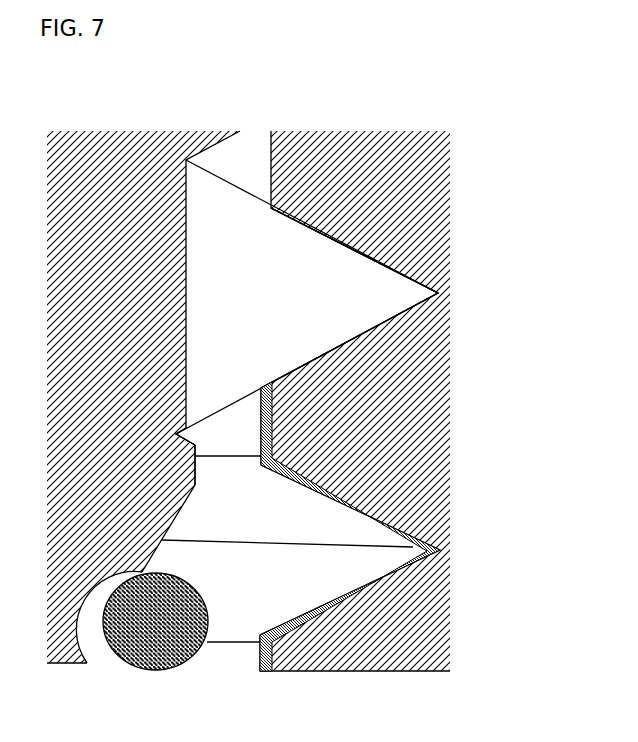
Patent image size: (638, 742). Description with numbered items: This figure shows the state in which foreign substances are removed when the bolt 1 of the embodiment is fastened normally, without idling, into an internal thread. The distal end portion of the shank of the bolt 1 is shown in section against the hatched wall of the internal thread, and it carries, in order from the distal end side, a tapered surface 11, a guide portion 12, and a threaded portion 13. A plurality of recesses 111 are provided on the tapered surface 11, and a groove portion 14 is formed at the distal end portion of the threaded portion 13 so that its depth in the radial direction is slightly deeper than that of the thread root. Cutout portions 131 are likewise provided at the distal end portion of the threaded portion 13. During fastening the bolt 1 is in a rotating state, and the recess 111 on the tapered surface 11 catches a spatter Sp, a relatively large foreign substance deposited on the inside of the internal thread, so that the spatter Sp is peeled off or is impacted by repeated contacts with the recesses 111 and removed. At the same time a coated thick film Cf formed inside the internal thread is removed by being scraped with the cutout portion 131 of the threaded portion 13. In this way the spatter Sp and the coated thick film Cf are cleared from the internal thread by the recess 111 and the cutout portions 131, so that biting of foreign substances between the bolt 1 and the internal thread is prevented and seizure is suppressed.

The bolt 1 is at (87, 120).
The tapered surface 11 is at (162, 546).
The guide portion 12 is at (200, 468).
The threaded portion 13 is at (441, 298).
The groove portion 14 is at (184, 433).
The recess 111 is at (98, 640).
The cutout portion 131 is at (373, 293).
The coated thick film Cf is at (325, 498).
The spatter Sp is at (168, 670).